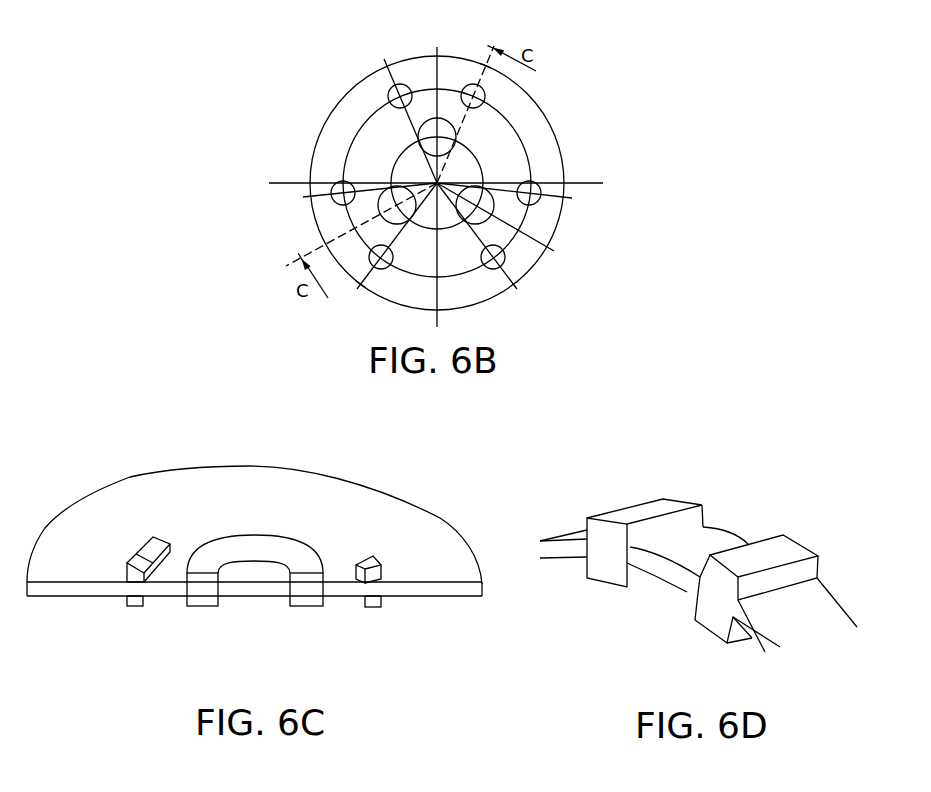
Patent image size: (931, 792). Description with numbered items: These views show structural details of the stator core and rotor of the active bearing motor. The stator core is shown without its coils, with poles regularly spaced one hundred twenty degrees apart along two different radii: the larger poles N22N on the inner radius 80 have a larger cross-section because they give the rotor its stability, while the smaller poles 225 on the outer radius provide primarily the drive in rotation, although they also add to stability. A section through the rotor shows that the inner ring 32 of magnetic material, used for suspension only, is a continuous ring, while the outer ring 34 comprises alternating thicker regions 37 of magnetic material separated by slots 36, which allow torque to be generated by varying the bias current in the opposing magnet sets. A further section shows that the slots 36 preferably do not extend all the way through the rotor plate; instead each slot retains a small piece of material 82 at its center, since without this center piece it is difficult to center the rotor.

In FIG. 6B, the inner radius 80 is at (478, 162).
In FIG. 6B, the larger poles N22N is at (435, 118).
In FIG. 6B, the smaller poles 225 is at (485, 97).
In FIG. 6C, the inner ring 32 is at (202, 607).
In FIG. 6C, the outer ring 34 is at (137, 607).
In FIG. 6C, the slots 36 is at (143, 548).
In FIG. 6D, the slots 36 is at (710, 547).
In FIG. 6D, the thicker regions 37 is at (658, 505).
In FIG. 6D, the small piece of material 82 is at (677, 573).